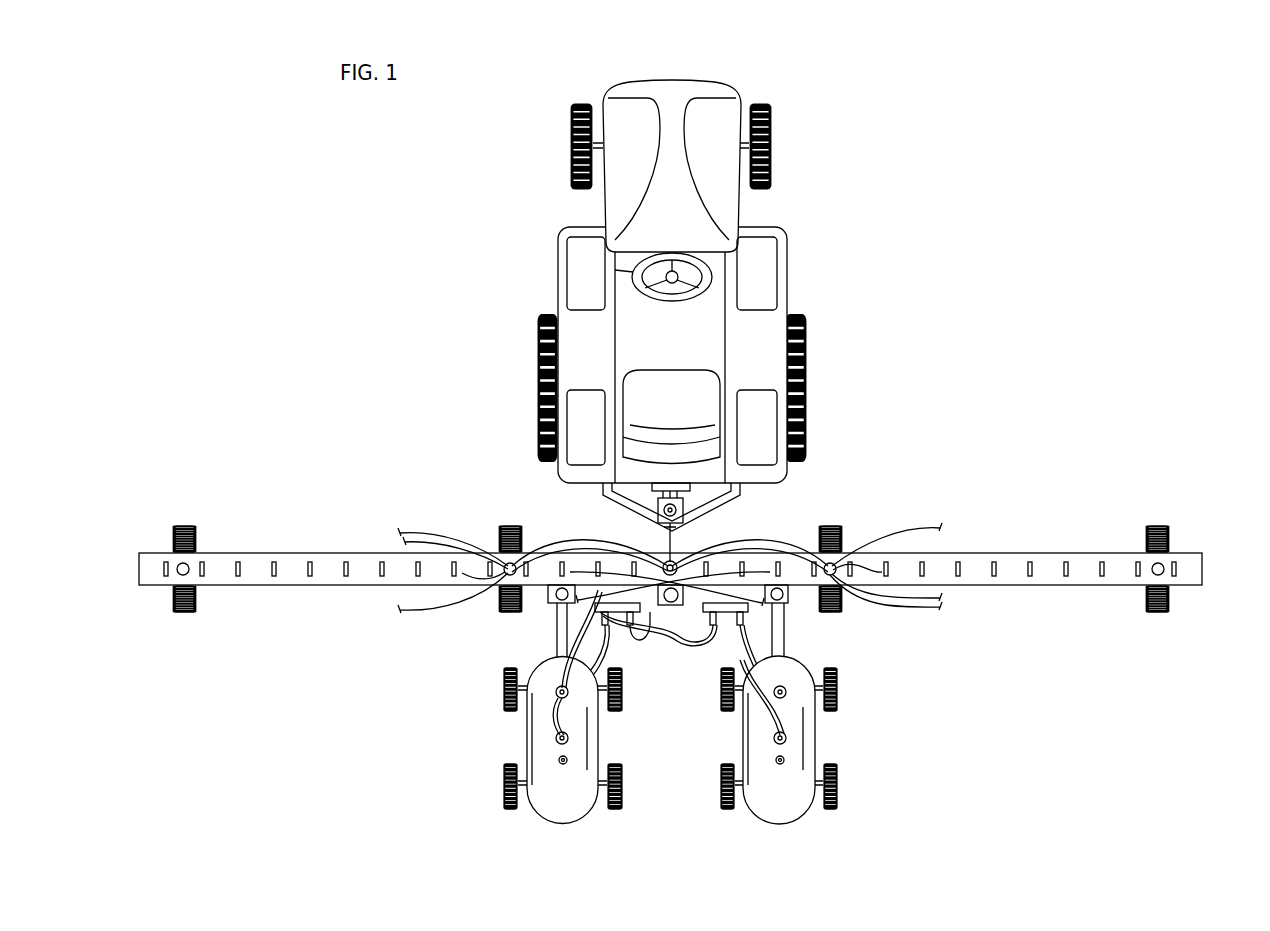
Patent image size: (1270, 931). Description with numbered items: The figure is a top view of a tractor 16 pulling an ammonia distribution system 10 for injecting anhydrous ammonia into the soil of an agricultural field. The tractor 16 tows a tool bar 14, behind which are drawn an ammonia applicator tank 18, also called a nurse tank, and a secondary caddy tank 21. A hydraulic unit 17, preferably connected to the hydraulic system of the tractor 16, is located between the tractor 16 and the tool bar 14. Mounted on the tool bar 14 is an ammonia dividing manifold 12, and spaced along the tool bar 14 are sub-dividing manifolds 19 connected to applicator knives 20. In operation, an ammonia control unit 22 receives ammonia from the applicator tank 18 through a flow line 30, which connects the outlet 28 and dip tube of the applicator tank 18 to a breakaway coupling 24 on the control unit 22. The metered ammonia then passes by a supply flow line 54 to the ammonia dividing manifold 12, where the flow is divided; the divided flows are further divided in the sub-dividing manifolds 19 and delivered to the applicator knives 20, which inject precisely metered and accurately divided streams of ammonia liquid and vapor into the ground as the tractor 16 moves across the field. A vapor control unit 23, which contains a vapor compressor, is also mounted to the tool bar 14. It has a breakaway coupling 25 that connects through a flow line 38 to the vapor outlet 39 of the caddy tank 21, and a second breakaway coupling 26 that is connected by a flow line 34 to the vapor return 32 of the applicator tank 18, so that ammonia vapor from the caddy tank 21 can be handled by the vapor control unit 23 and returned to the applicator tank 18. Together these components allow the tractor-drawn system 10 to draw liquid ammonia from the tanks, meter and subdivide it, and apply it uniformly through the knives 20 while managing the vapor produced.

The ammonia distribution system 10 is at (985, 347).
The ammonia dividing manifold 12 is at (657, 557).
The tool bar 14 is at (1008, 586).
The tractor 16 is at (793, 266).
The hydraulic unit 17 is at (690, 505).
The ammonia applicator tank 18 is at (600, 725).
The sub-dividing manifolds 19 is at (513, 563).
The applicator knives 20 is at (1068, 565).
The caddy tank 21 is at (816, 715).
The ammonia control unit 22 is at (628, 626).
The vapor control unit 23 is at (728, 614).
The breakaway coupling 24 is at (603, 620).
The breakaway coupling 25 is at (742, 615).
The breakaway coupling 26 is at (712, 630).
The outlet 28 is at (545, 680).
The flow line 30 is at (562, 660).
The vapor return 32 is at (556, 740).
The flow line 34 is at (553, 714).
The flow line 38 is at (762, 712).
The vapor outlet 39 is at (787, 740).
The supply flow line 54 is at (648, 637).